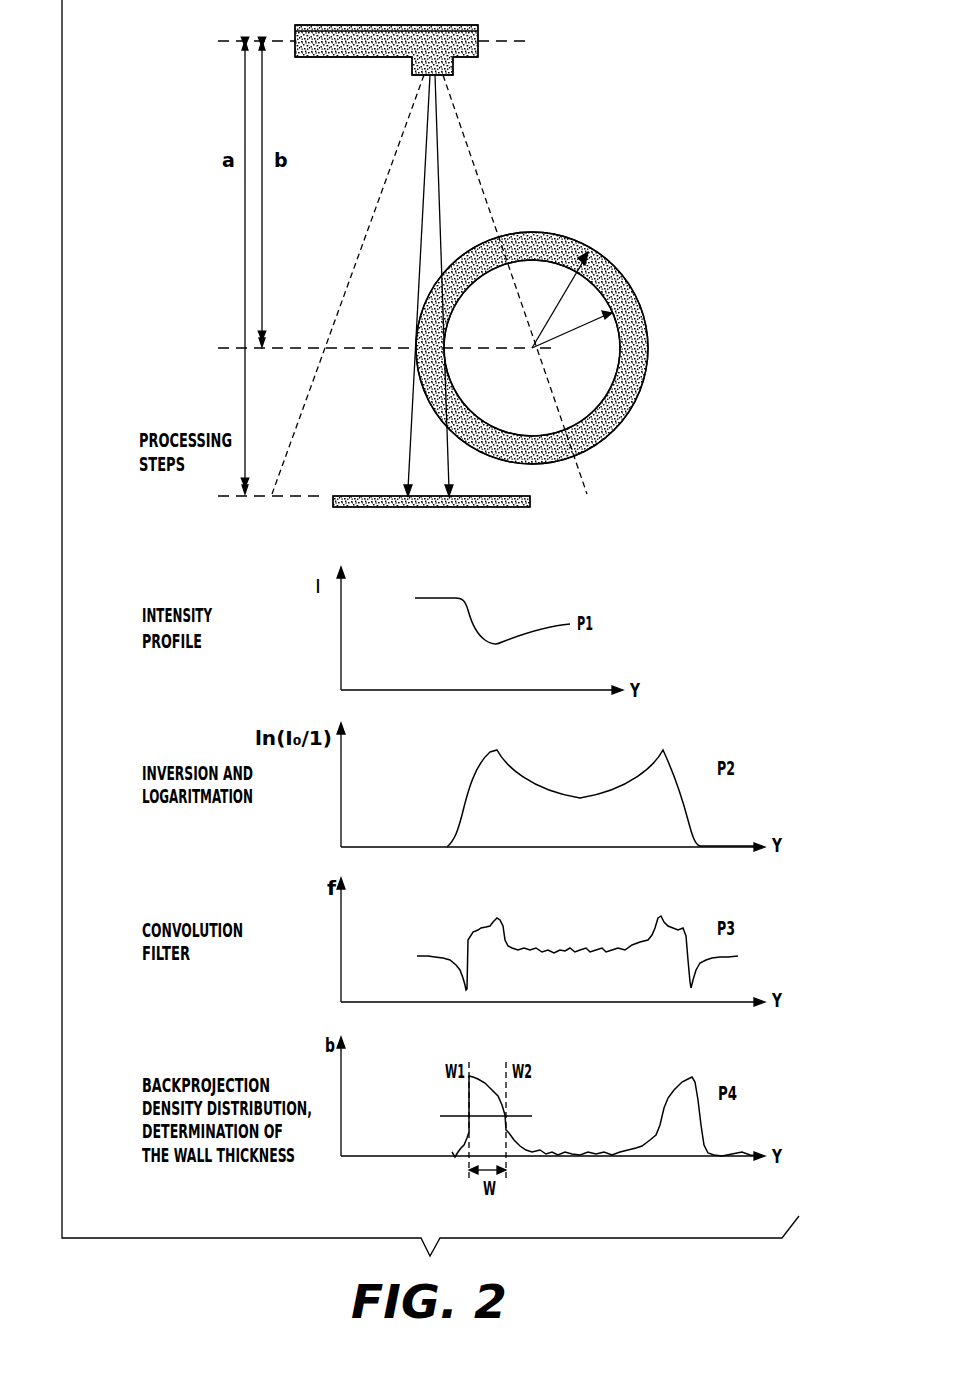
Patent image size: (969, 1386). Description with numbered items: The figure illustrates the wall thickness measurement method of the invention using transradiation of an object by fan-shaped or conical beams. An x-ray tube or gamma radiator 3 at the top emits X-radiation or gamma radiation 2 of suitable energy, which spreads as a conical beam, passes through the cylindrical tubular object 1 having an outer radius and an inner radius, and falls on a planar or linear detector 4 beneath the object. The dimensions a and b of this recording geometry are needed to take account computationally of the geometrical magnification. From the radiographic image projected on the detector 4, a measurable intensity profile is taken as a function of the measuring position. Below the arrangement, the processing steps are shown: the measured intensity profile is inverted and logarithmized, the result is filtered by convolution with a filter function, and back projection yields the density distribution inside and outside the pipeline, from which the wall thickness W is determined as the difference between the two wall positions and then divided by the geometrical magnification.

The tubular object 1 is at (610, 282).
The X-radiation or gamma radiation 2 is at (438, 217).
The x-ray tube or gamma radiator 3 is at (470, 28).
The detector 4 is at (530, 500).